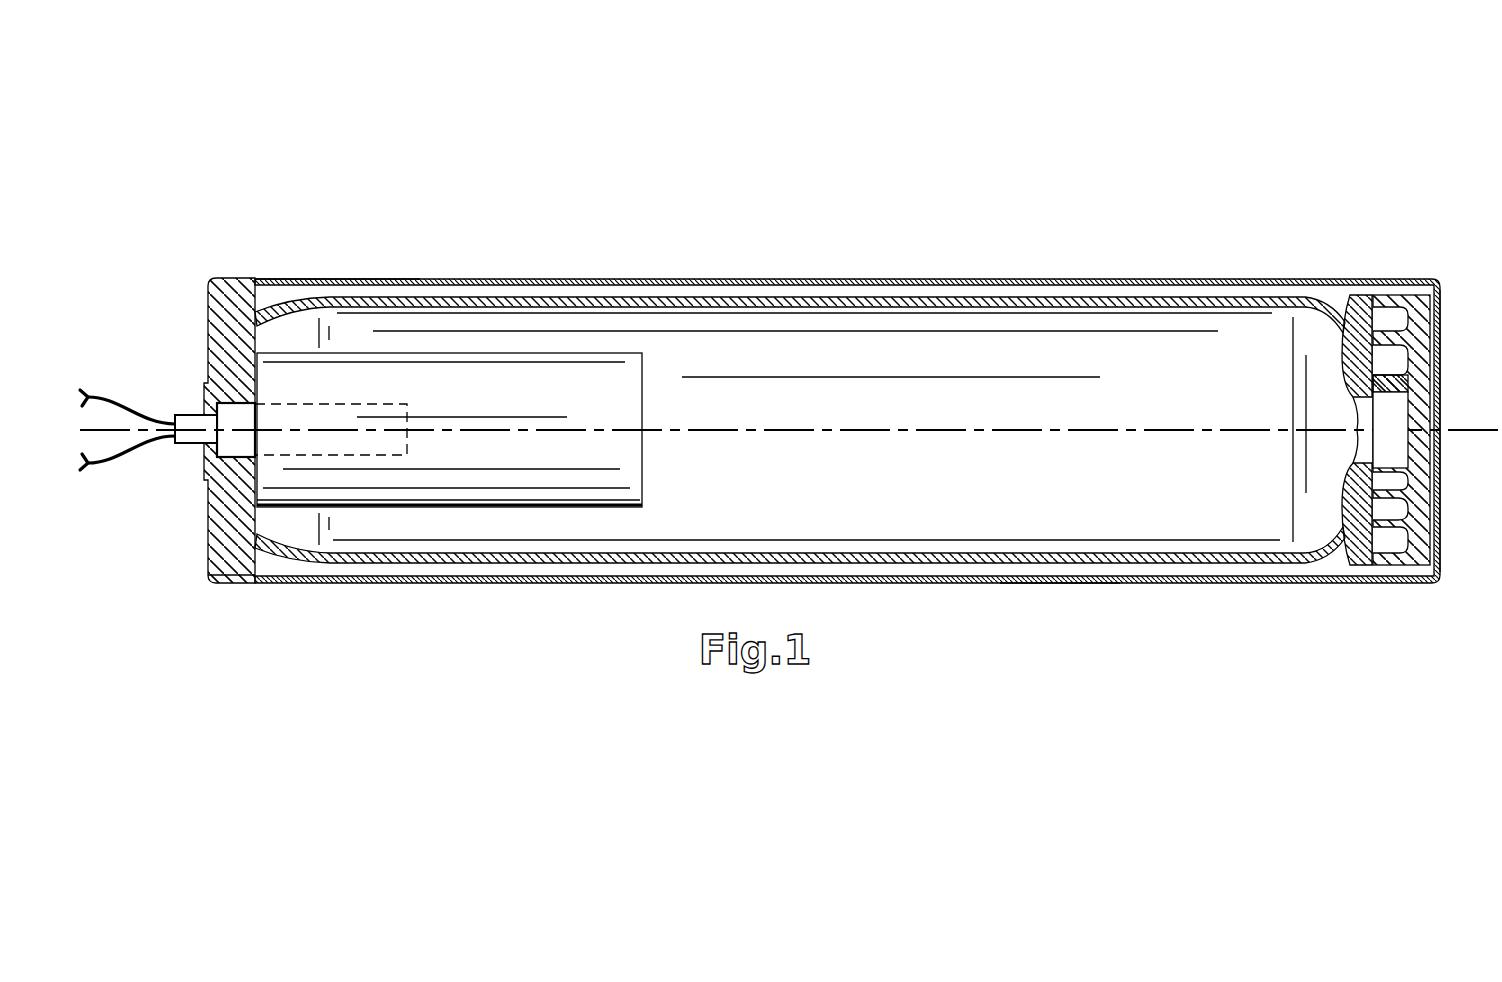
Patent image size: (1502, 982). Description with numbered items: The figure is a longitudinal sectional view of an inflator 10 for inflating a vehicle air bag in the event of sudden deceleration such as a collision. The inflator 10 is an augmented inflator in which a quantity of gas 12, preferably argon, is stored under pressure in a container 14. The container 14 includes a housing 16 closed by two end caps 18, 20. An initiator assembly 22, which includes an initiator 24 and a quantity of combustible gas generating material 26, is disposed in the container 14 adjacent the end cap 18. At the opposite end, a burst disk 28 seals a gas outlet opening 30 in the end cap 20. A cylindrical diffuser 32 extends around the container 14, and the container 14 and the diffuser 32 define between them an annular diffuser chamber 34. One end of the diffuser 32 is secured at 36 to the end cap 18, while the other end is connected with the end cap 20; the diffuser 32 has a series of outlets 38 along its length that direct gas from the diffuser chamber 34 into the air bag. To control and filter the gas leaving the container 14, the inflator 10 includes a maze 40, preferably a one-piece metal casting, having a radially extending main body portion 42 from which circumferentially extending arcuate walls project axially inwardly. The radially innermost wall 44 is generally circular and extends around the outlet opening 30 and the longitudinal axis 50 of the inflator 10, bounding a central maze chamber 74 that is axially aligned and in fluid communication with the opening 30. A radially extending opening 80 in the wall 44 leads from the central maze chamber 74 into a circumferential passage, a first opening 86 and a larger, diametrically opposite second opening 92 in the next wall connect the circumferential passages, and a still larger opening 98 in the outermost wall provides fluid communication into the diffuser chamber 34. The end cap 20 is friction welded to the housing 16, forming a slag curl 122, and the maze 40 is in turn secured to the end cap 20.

The inflator 10 is at (722, 208).
The gas 12 is at (872, 347).
The container 14 is at (673, 290).
The housing 16 is at (774, 303).
The end cap 18 is at (233, 280).
The end cap 20 is at (1334, 343).
The initiator assembly 22 is at (514, 518).
The initiator 24 is at (353, 445).
The combustible gas generating material 26 is at (618, 453).
The burst disk 28 is at (1347, 416).
The gas outlet opening 30 is at (1347, 444).
The cylindrical diffuser 32 is at (403, 270).
The annular diffuser chamber 34 is at (1060, 576).
The securing location 36 is at (250, 582).
The outlets 38 is at (950, 581).
The maze 40 is at (1402, 282).
The main body portion 42 is at (1423, 332).
The radially innermost wall 44 is at (1393, 386).
The longitudinal axis 50 is at (940, 430).
The central maze chamber 74 is at (1390, 413).
The radially extending opening 80 is at (1393, 476).
The first opening 86 is at (1393, 503).
The second opening 92 is at (1388, 343).
The opening 98 is at (1390, 568).
The slag curl 122 is at (1436, 305).